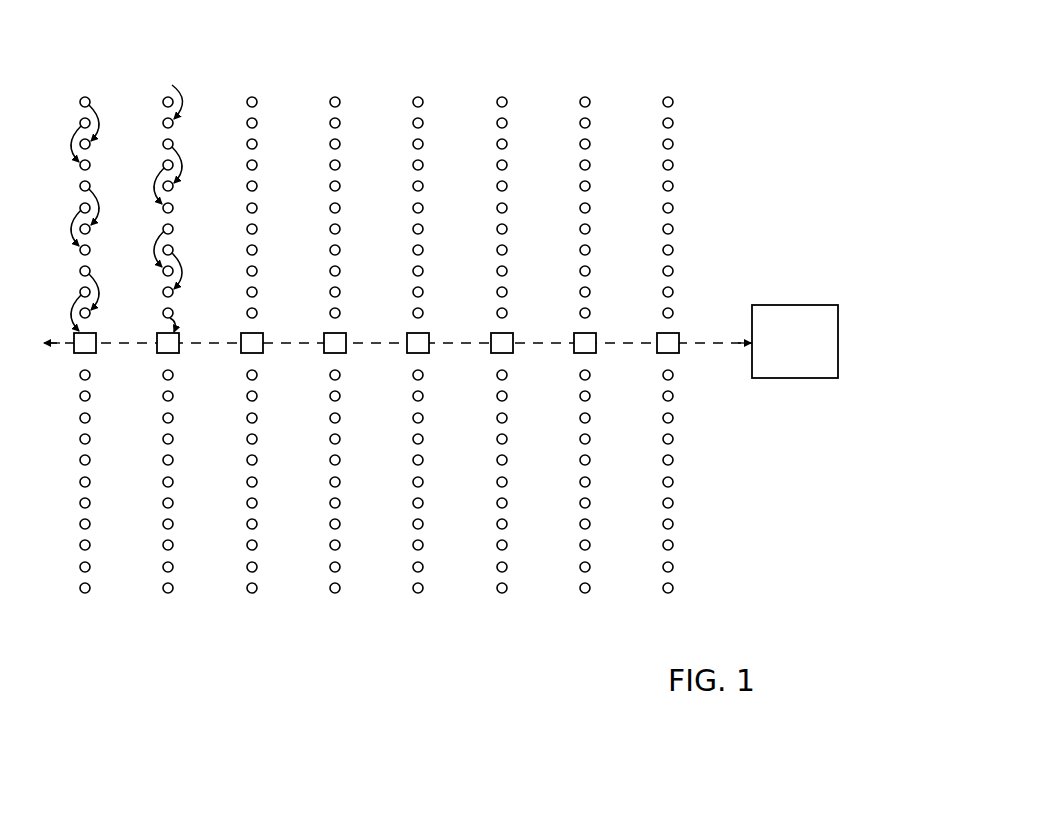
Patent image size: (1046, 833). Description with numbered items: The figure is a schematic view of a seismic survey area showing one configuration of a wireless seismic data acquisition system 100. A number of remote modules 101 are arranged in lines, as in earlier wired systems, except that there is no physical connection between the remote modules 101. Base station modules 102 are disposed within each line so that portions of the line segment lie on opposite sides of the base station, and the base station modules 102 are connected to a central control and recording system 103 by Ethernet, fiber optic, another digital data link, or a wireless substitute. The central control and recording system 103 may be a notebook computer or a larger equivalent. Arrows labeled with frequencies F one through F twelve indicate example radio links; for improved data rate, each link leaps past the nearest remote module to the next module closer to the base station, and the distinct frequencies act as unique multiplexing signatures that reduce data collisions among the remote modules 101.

The seismic data acquisition system 100 is at (441, 302).
The remote modules 101 is at (689, 117).
The base station modules 102 is at (323, 350).
The central control and recording system 103 is at (778, 378).